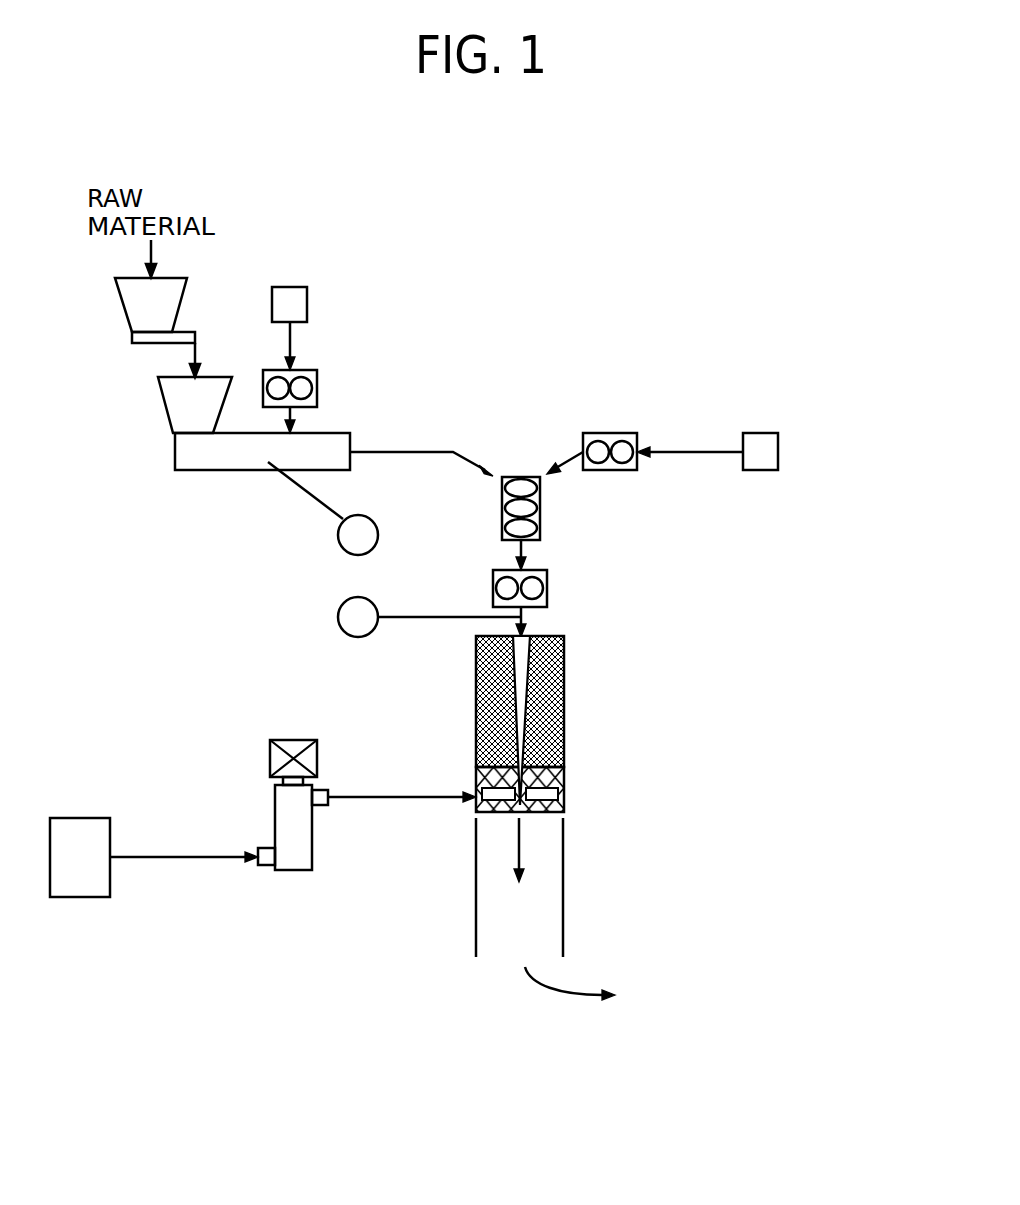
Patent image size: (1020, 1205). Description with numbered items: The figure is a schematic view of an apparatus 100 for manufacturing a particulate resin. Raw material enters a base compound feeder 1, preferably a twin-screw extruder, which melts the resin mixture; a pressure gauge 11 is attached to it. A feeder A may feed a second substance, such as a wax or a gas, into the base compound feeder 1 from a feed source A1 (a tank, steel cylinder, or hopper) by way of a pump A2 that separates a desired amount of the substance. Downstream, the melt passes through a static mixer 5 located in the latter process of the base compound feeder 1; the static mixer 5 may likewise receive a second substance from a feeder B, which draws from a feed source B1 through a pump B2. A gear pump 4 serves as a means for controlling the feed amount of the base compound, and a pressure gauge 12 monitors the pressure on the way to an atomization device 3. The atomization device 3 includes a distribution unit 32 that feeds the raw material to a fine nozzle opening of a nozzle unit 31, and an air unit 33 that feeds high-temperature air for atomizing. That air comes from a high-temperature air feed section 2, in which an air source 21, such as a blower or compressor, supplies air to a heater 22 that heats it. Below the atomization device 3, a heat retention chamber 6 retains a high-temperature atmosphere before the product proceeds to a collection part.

The apparatus 100 is at (603, 227).
The base compound feeder 1 is at (175, 452).
The pressure gauge 11 is at (338, 535).
The pressure gauge 12 is at (338, 617).
The static mixer 5 is at (502, 517).
The gear pump 4 is at (493, 590).
The atomization device 3 is at (680, 636).
The distribution unit 32 is at (571, 636).
The nozzle unit 31 is at (571, 770).
The air unit 33 is at (570, 789).
The heat retention chamber 6 is at (563, 890).
The high-temperature air feed section 2 is at (450, 703).
The air source 21 is at (90, 897).
The heater 22 is at (300, 870).
The feeder A is at (390, 283).
The feed source A1 is at (307, 302).
The pump A2 is at (317, 390).
The feeder B is at (777, 413).
The feed source B1 is at (760, 470).
The pump B2 is at (617, 470).